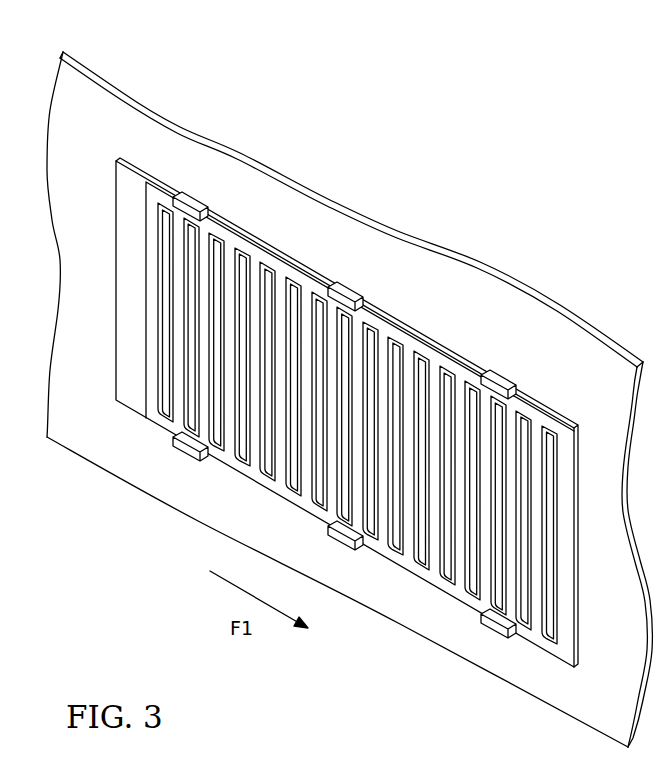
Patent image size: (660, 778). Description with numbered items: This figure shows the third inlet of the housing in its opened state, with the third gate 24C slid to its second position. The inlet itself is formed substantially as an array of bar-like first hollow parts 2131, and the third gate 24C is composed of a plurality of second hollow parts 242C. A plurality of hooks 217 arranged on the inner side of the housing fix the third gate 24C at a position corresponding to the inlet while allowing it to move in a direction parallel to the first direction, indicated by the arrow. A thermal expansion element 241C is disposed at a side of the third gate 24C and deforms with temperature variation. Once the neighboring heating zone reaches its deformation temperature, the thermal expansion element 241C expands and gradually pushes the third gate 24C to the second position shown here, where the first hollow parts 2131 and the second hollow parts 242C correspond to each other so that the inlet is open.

The thermal expansion element 241C is at (118, 223).
The third gate 24C is at (293, 271).
The first hollow parts 2131 is at (172, 370).
The second hollow parts 242C is at (168, 413).
The hook 217 is at (192, 198).